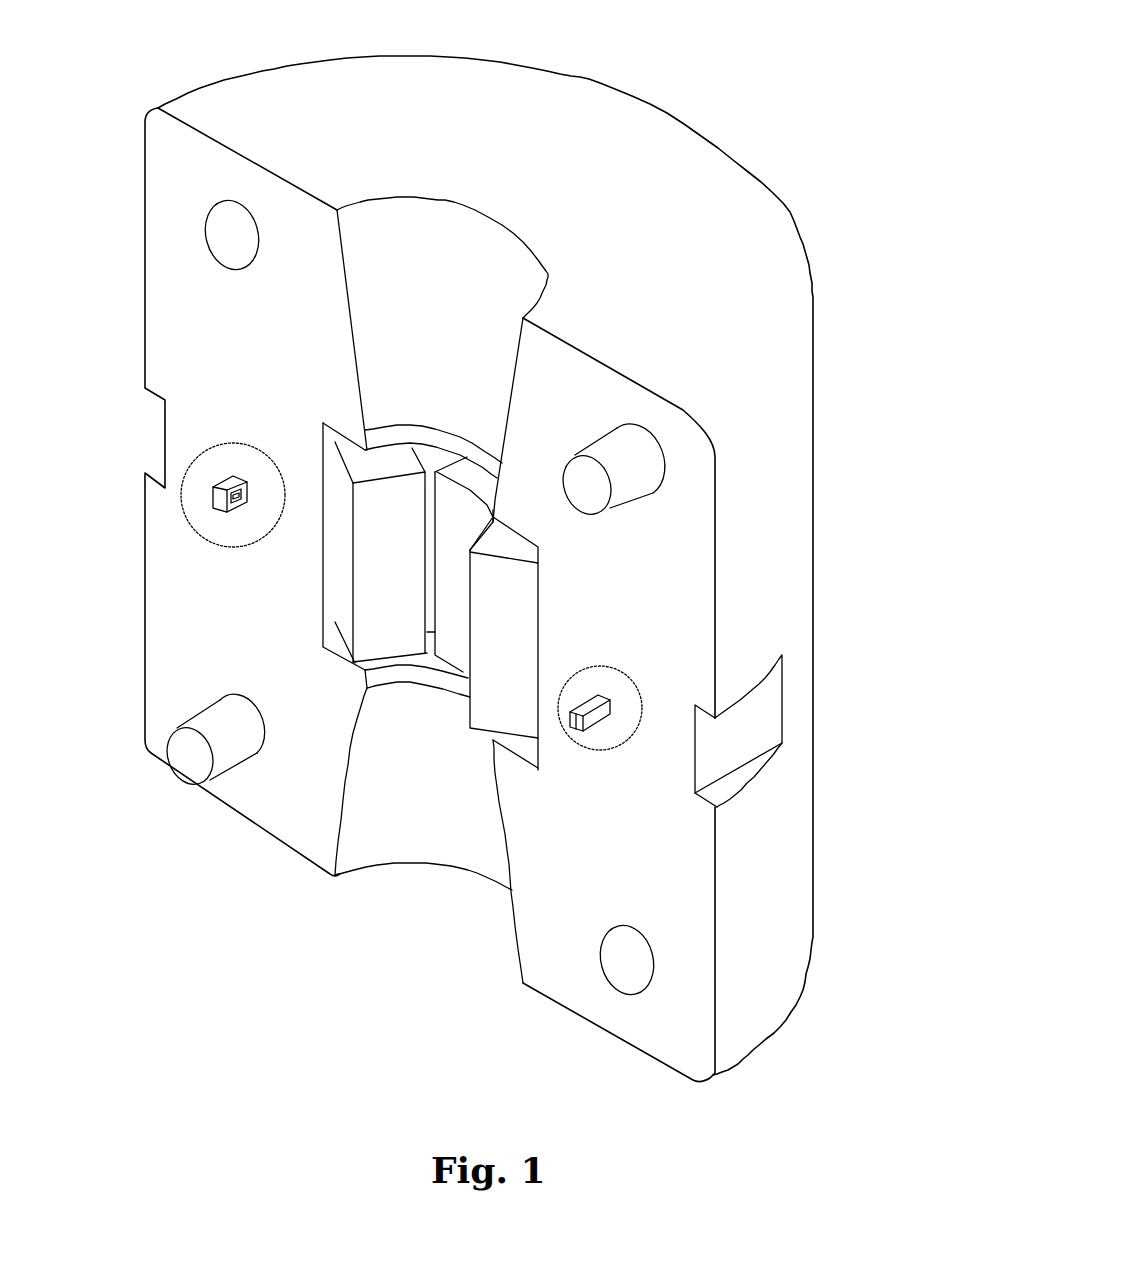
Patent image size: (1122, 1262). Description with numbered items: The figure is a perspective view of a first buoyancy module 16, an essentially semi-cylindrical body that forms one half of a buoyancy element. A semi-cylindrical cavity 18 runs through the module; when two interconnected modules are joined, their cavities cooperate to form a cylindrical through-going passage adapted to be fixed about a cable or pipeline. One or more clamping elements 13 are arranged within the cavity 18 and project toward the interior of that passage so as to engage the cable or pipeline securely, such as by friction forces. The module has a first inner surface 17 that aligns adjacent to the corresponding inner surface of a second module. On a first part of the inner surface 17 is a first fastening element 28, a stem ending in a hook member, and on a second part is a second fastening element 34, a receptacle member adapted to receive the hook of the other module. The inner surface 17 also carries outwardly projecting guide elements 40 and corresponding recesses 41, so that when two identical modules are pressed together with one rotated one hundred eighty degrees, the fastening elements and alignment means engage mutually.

The clamping element 13 is at (387, 465).
The first buoyancy module 16 is at (658, 133).
The first inner surface 17 is at (308, 810).
The semi-cylindrical cavity 18 is at (413, 288).
The first fastening element 28 is at (627, 700).
The second fastening element 34 is at (205, 502).
The guide element 40 is at (615, 483).
The recess 41 is at (230, 241).